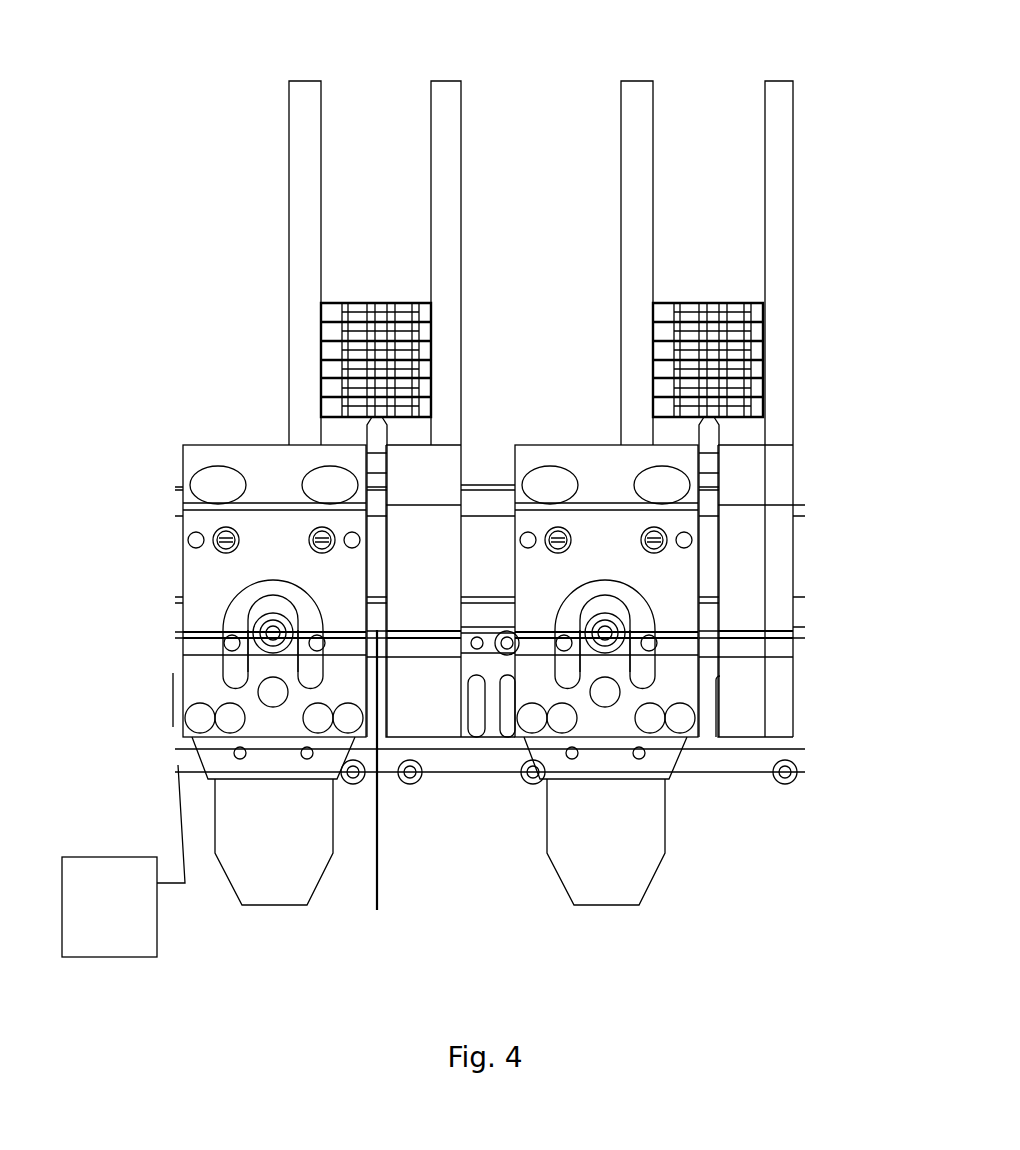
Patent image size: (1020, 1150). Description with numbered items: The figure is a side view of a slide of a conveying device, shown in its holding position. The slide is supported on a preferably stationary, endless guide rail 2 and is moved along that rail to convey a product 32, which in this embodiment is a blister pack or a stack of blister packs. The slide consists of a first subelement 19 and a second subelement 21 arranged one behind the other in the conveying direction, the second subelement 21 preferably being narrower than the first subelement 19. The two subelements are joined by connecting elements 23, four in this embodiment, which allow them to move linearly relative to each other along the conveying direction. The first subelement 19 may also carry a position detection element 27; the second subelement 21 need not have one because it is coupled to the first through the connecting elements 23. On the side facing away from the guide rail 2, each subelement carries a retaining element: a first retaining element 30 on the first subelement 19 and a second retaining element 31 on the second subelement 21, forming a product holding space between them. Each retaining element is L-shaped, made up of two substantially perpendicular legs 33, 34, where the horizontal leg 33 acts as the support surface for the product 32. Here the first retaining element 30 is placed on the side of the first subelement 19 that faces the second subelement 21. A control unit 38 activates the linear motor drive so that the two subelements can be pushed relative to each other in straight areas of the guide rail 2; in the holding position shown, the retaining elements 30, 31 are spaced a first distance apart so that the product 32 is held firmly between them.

The guide rail 2 is at (178, 522).
The first subelement 19 is at (222, 590).
The second subelement 21 is at (763, 517).
The connecting element 23 is at (715, 465).
The position detection element 27 is at (283, 870).
The first retaining element 30 is at (300, 163).
The second retaining element 31 is at (785, 160).
The product 32 is at (687, 307).
The leg 33 is at (343, 430).
The leg 34 is at (300, 270).
The control unit 38 is at (123, 861).